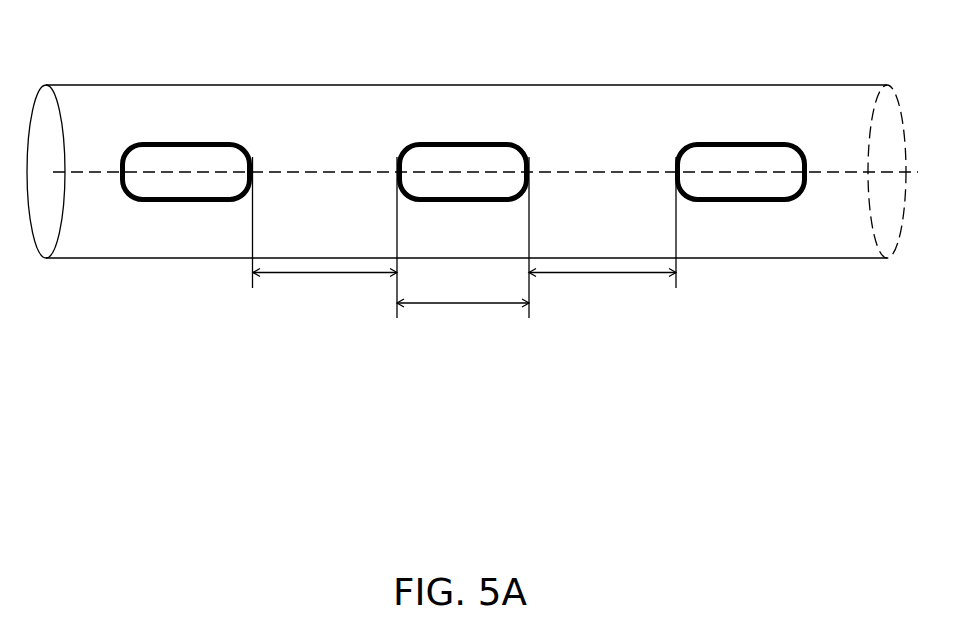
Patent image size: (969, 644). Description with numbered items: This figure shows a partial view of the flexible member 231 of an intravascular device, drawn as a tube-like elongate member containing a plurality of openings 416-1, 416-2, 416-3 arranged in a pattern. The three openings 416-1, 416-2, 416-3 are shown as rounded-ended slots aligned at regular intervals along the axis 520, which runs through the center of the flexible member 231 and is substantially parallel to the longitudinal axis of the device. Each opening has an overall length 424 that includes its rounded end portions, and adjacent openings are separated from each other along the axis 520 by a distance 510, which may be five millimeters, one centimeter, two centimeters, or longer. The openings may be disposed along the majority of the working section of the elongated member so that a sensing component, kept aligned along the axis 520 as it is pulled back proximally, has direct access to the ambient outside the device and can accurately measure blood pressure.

The flexible member 231 is at (238, 83).
The axis 520 is at (347, 170).
The opening 416-1 is at (212, 194).
The opening 416-2 is at (491, 194).
The opening 416-3 is at (768, 194).
The distance 510 is at (287, 274).
The overall length 424 is at (463, 316).